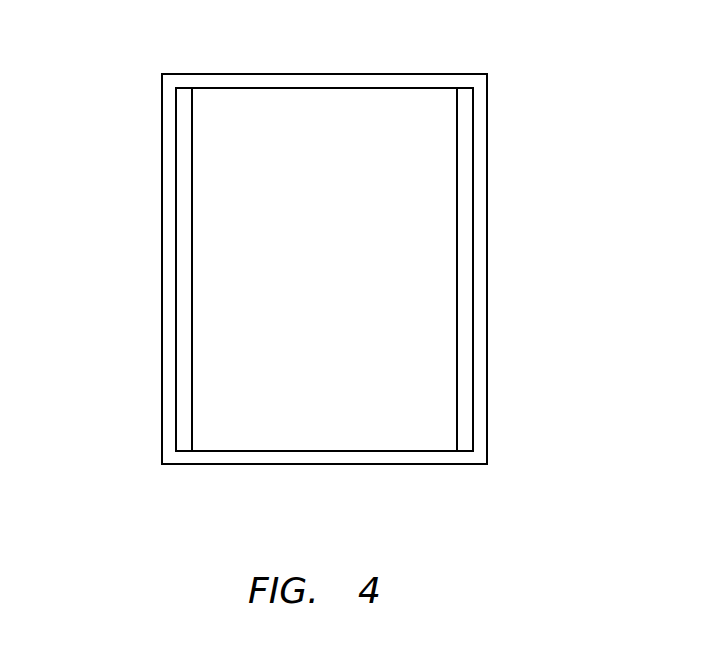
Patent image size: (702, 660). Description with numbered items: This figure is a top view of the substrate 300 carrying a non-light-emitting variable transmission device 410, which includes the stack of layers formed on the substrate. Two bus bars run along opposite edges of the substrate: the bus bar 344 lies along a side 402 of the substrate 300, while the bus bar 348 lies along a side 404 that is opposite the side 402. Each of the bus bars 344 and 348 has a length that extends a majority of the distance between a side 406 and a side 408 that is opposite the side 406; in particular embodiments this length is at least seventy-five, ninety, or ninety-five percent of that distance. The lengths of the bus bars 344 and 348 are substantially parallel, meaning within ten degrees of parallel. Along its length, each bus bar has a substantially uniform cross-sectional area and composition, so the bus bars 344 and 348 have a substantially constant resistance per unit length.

The substrate 300 is at (482, 262).
The bus bar 344 is at (168, 333).
The bus bar 348 is at (465, 215).
The side 402 is at (157, 134).
The side 404 is at (491, 127).
The side 406 is at (301, 70).
The side 408 is at (338, 466).
The non-light-emitting variable transmission device 410 is at (345, 281).